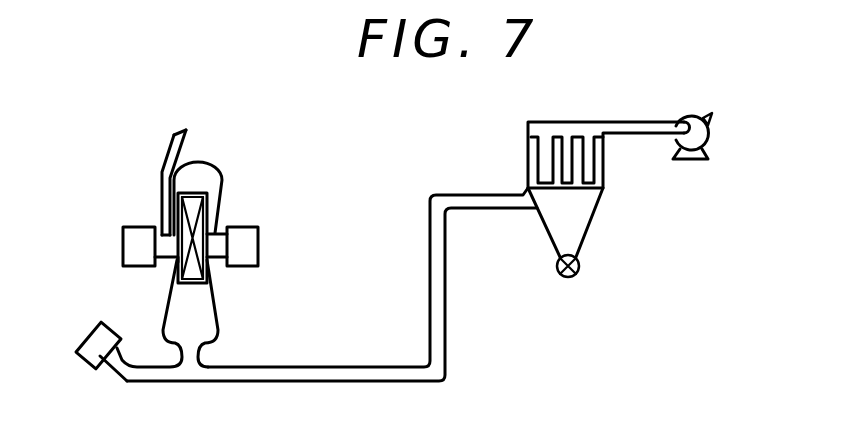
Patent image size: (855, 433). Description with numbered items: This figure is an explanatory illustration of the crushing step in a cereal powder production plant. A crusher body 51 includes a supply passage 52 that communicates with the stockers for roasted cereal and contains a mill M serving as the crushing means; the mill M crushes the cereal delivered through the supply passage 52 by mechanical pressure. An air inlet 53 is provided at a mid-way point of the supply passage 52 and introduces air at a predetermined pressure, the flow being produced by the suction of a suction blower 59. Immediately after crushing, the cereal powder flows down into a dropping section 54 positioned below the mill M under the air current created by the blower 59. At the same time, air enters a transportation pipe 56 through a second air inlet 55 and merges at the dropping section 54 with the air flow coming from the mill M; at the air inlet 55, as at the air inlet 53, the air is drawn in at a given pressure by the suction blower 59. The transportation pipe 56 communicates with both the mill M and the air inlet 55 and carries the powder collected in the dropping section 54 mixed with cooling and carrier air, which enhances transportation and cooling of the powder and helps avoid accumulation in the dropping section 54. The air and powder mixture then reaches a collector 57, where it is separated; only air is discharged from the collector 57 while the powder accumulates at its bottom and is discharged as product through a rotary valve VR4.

The crusher body 51 is at (233, 187).
The supply passage 52 is at (173, 129).
The air inlet 53 is at (168, 147).
The dropping section 54 is at (192, 362).
The air inlet 55 is at (97, 368).
The transportation pipe 56 is at (350, 381).
The collector 57 is at (519, 156).
The suction blower 59 is at (702, 137).
The mill M is at (189, 283).
The rotary valve VR4 is at (578, 267).